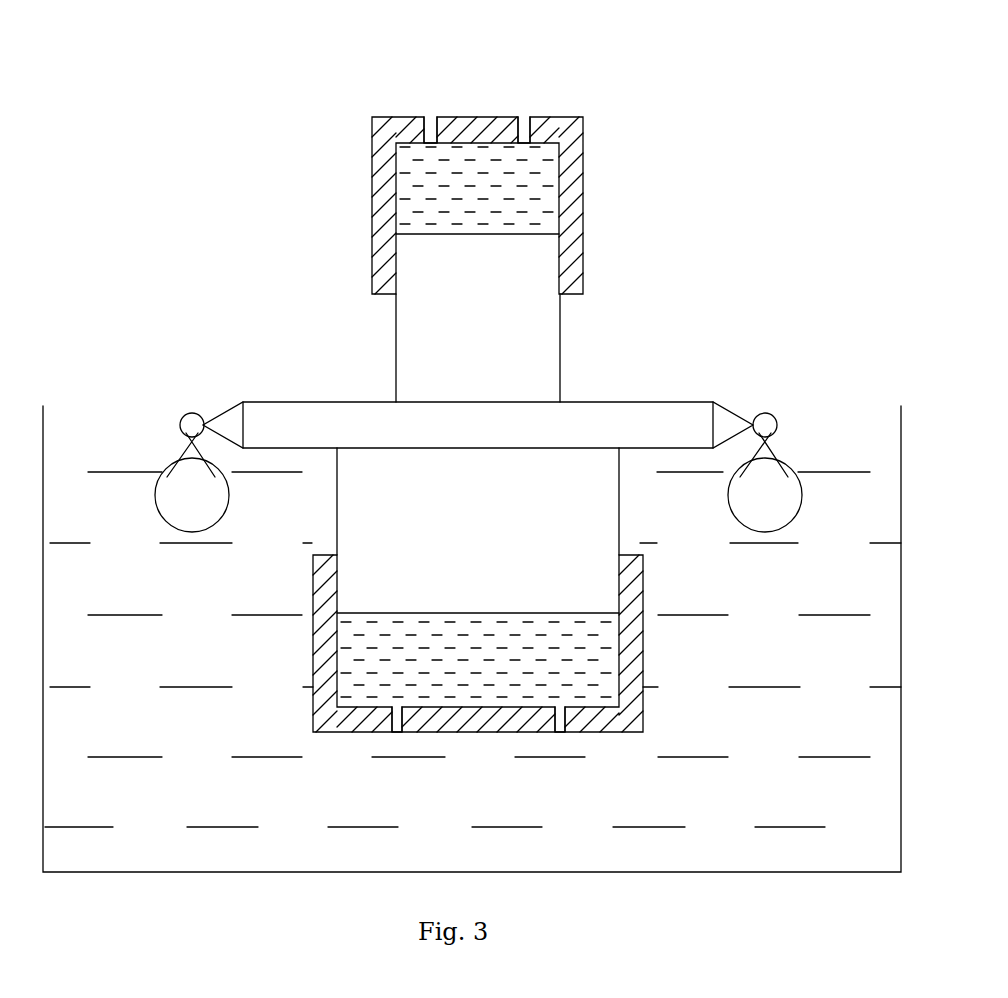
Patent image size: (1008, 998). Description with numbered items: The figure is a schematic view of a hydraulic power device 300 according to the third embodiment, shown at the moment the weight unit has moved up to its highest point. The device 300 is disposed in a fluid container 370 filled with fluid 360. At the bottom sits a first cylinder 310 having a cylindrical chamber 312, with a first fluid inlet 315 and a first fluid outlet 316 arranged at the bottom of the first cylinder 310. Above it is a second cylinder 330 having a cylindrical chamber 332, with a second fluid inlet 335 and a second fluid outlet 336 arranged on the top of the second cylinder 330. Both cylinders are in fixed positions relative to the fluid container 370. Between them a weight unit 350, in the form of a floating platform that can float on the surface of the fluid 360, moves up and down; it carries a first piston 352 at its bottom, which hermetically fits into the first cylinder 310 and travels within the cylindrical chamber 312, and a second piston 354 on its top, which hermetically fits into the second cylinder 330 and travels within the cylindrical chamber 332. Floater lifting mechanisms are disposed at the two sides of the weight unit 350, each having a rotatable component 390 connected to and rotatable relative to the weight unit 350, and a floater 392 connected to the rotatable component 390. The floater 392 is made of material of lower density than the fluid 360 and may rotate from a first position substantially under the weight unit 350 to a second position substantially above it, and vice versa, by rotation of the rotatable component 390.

The hydraulic power device 300 is at (494, 54).
The first cylinder 310 is at (313, 639).
The cylindrical chamber 312 is at (345, 667).
The first fluid inlet 315 is at (397, 733).
The first fluid outlet 316 is at (558, 733).
The second cylinder 330 is at (585, 195).
The cylindrical chamber 332 is at (550, 157).
The second fluid inlet 335 is at (432, 119).
The second fluid outlet 336 is at (525, 122).
The weight unit 350 is at (315, 402).
The first piston 352 is at (337, 522).
The second piston 354 is at (560, 345).
The fluid 360 is at (248, 827).
The fluid container 370 is at (172, 872).
The rotatable component 390 is at (185, 415).
The floater 392 is at (163, 498).